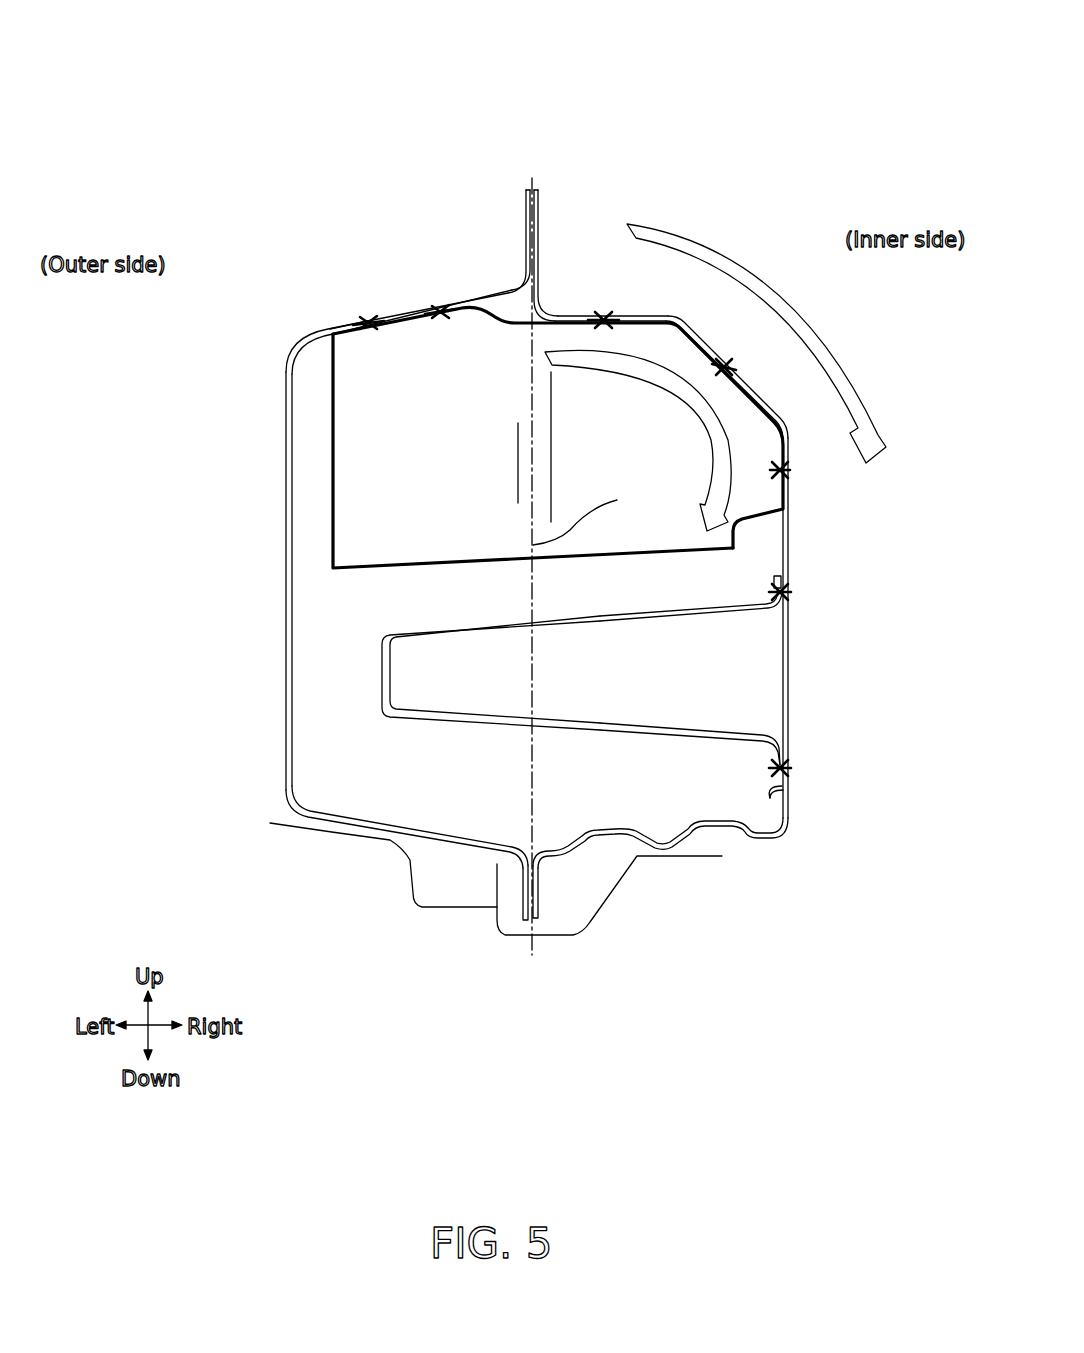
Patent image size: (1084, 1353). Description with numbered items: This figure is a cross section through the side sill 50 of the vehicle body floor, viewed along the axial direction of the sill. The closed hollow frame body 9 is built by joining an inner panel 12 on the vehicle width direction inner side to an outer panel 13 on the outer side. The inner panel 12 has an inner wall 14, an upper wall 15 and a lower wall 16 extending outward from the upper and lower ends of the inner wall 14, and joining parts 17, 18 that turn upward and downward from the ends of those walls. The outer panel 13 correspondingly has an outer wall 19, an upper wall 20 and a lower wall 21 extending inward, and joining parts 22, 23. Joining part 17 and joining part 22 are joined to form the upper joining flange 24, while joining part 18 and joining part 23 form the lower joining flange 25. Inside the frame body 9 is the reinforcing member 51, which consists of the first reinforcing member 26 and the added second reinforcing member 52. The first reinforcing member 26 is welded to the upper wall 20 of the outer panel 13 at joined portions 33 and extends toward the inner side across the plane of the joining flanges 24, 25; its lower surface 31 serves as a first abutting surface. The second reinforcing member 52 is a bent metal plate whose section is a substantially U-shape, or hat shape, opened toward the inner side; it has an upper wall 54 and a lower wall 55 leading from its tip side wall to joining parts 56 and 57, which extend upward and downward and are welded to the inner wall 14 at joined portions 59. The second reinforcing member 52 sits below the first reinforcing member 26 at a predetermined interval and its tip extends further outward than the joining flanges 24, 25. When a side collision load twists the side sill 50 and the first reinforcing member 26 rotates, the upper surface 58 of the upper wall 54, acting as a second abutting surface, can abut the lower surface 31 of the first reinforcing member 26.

The frame body 9 is at (539, 576).
The inner panel 12 is at (570, 312).
The outer panel 13 is at (286, 337).
The inner wall 14 is at (789, 622).
The upper wall 15 is at (660, 320).
The lower wall 16 is at (653, 858).
The joining part 17 is at (540, 243).
The joining part 18 is at (525, 896).
The outer wall 19 is at (287, 380).
The upper wall 20 is at (348, 323).
The lower wall 21 is at (332, 824).
The joining part 22 is at (525, 232).
The joining part 23 is at (525, 896).
The joining flange 24 is at (563, 110).
The joining flange 25 is at (567, 1004).
The first reinforcing member 26 is at (326, 504).
The lower surface 31 is at (693, 556).
The joined portion 33 is at (368, 317).
The side sill 50 is at (628, 172).
The reinforcing member 51 is at (141, 562).
The second reinforcing member 52 is at (375, 673).
The upper wall 54 is at (608, 623).
The lower wall 55 is at (713, 746).
The joining part 56 is at (781, 587).
The joining part 57 is at (770, 798).
The upper surface 58 is at (644, 610).
The joined portion 59 is at (786, 591).